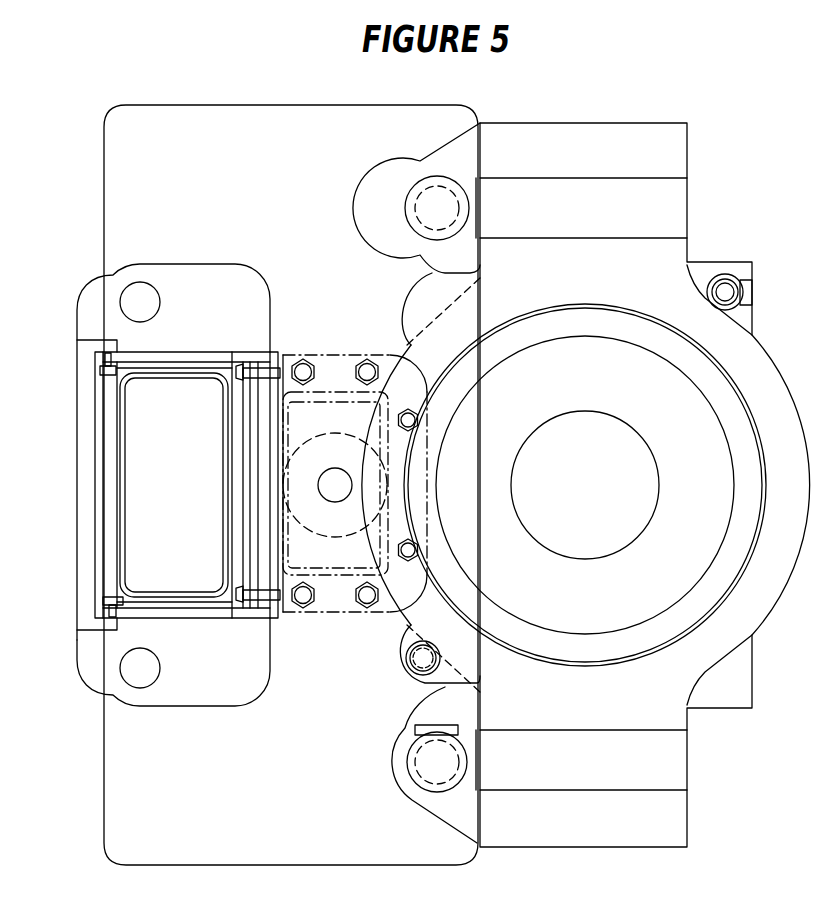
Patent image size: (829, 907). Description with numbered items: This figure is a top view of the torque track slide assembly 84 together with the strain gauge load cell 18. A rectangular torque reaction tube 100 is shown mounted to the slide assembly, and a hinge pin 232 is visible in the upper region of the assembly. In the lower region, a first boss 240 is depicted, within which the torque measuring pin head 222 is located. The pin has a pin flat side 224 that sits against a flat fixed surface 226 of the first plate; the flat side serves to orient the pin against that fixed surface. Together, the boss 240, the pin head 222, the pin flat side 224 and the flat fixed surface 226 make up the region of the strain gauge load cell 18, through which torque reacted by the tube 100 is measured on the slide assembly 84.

The torque track slide assembly 84 is at (104, 762).
The rectangular torque reaction tube 100 is at (117, 485).
The hinge pin 232 is at (423, 173).
The strain gauge load cell 18 is at (382, 711).
The flat fixed surface 226 is at (415, 730).
The pin flat side 224 is at (407, 762).
The first boss 240 is at (390, 786).
The torque measuring pin head 222 is at (427, 787).